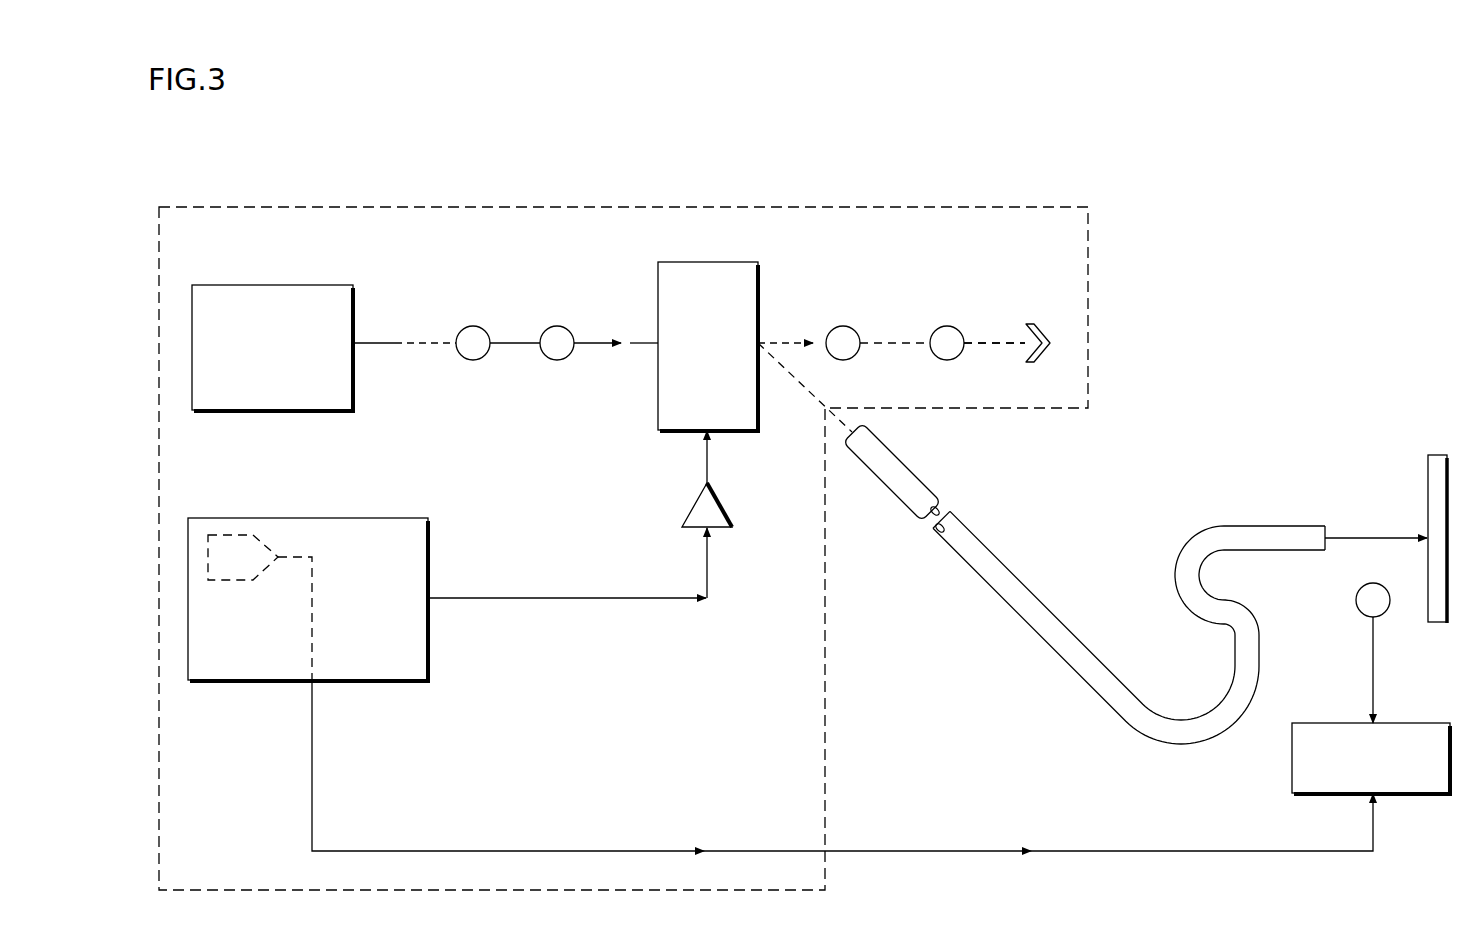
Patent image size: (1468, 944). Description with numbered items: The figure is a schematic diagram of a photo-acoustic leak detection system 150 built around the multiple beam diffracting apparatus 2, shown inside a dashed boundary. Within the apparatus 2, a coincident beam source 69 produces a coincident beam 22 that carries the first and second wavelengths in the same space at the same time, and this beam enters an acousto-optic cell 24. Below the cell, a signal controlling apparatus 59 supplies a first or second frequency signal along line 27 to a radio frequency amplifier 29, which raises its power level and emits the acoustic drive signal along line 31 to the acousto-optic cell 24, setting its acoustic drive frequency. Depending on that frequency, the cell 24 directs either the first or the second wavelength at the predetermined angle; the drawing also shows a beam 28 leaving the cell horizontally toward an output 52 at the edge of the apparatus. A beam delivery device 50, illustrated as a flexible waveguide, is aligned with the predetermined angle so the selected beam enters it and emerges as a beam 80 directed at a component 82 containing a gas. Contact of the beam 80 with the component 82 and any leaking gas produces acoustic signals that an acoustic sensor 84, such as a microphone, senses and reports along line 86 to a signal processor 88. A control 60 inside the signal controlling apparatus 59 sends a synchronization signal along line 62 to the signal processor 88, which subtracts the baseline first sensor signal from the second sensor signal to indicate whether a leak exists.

The photo-acoustic leak detection system 150 is at (283, 185).
The multiple beam diffracting apparatus 2 is at (478, 207).
The coincident beam source 69 is at (262, 285).
The coincident beam 22 is at (432, 341).
The acousto-optic cell 24 is at (673, 262).
The first wavelength output beam 28 is at (982, 340).
The optical output 52 is at (1046, 336).
The beam delivery device 50 is at (887, 462).
The radio frequency amplifier 29 is at (727, 502).
The line 31 is at (707, 462).
The line 27 is at (585, 599).
The signal controlling apparatus 59 is at (247, 517).
The control 60 is at (246, 570).
The line 62 is at (440, 850).
The beam 80 is at (1385, 537).
The component 82 is at (1443, 455).
The acoustic sensor 84 is at (1357, 600).
The line 86 is at (1374, 658).
The signal processor 88 is at (1411, 723).